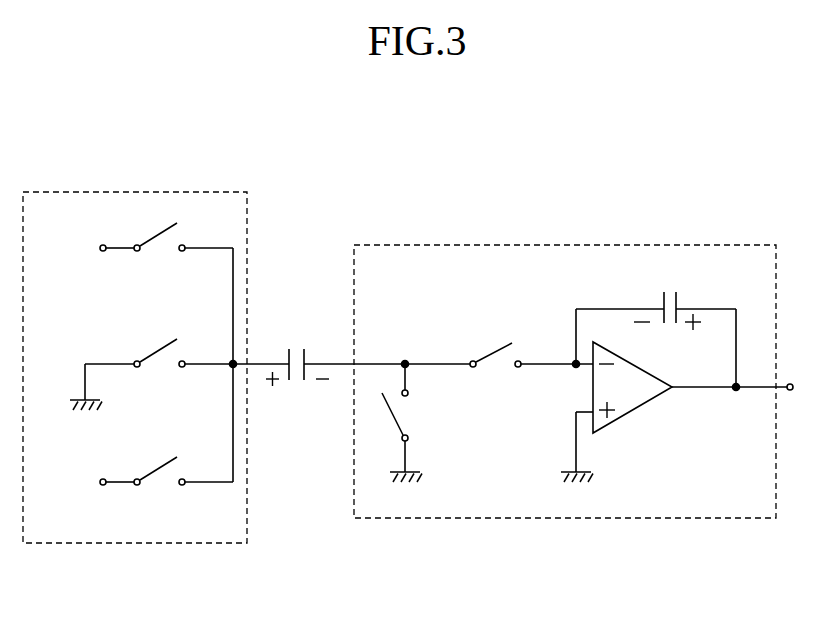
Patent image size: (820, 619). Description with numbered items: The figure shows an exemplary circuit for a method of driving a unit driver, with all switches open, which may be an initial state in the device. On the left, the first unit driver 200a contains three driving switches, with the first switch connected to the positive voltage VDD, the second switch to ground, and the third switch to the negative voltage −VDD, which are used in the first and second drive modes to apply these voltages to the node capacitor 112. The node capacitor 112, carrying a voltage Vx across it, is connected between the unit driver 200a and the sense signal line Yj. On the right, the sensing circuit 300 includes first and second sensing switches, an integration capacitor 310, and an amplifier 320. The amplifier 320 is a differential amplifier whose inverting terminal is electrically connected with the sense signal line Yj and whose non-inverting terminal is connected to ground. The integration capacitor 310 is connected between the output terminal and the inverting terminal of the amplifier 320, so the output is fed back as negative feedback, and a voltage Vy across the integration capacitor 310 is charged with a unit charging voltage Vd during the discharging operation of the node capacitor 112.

The first unit driver 200a is at (217, 544).
The node capacitor 112 is at (300, 369).
The sensing circuit 300 is at (573, 409).
The integration capacitor 310 is at (680, 305).
The amplifier 320 is at (632, 410).